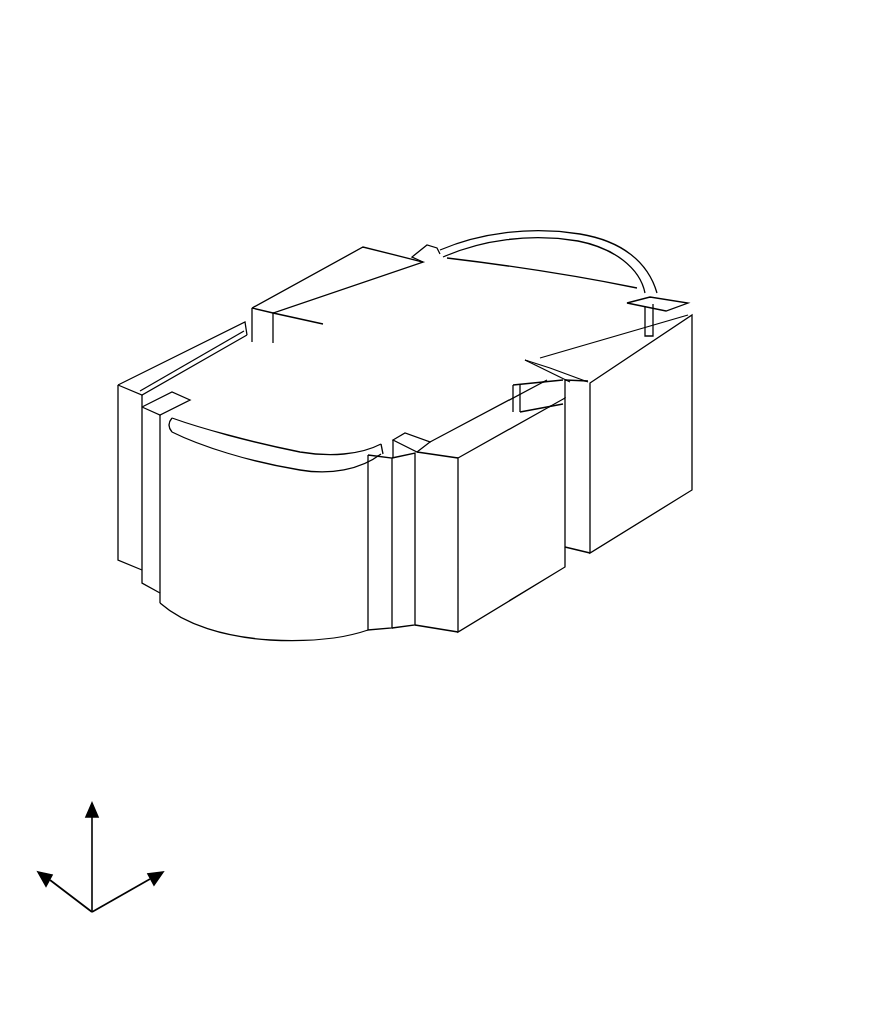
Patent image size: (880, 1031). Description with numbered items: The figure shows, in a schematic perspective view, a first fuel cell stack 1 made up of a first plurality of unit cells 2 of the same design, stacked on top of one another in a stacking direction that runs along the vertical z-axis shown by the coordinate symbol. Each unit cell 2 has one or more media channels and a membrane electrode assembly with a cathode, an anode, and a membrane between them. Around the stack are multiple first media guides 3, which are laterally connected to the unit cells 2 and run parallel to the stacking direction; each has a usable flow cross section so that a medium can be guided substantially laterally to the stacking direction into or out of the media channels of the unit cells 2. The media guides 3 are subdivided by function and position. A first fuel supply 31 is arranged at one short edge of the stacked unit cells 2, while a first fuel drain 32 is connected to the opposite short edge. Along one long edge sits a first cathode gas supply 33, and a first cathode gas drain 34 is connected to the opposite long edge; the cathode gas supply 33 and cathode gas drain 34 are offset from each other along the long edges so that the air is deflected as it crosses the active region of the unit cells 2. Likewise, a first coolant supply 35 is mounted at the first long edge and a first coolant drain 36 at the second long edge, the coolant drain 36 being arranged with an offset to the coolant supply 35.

The first fuel cell stack 1 is at (547, 82).
The unit cells 2 is at (676, 301).
The first media guides 3 is at (436, 444).
The first fuel supply 31 is at (263, 630).
The first fuel drain 32 is at (612, 246).
The first cathode gas supply 33 is at (303, 277).
The first cathode gas drain 34 is at (515, 587).
The first coolant supply 35 is at (182, 352).
The first coolant drain 36 is at (675, 360).